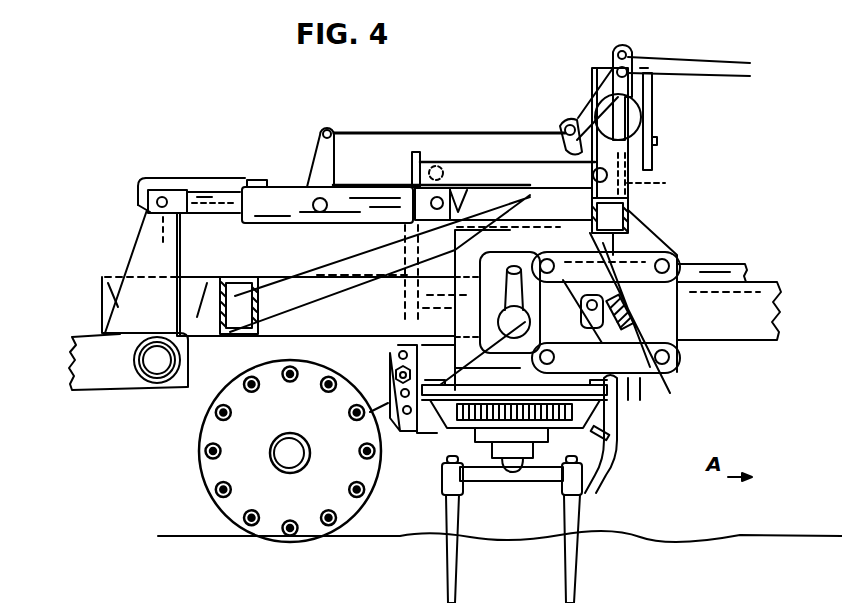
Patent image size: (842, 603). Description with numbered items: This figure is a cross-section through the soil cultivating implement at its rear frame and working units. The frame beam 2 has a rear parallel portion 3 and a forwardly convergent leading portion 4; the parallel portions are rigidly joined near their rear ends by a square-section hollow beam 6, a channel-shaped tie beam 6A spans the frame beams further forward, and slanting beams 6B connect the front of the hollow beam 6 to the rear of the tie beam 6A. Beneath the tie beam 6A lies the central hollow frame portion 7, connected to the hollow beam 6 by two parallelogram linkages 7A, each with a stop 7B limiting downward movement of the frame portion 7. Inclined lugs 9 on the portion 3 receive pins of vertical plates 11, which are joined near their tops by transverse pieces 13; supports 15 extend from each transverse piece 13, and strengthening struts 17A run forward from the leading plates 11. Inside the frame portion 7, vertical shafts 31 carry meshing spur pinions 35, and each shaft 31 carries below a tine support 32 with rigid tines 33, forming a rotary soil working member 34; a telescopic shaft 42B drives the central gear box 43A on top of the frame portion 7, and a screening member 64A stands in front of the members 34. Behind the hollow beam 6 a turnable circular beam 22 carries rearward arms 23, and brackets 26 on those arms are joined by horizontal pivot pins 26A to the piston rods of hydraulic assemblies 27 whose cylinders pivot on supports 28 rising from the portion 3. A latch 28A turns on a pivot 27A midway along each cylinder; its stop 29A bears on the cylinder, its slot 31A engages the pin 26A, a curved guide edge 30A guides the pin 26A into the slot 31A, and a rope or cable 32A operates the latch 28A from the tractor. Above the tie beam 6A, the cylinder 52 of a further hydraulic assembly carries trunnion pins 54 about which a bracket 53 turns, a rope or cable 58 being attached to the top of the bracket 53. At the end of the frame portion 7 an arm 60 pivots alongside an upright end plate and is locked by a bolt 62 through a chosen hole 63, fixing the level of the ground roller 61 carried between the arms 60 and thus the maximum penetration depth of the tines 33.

The frame beam 2 is at (756, 347).
The rear substantially parallel portion 3 is at (107, 276).
The leading portion 4 is at (728, 342).
The hollow beam 6 is at (240, 275).
The tie beam 6A is at (634, 212).
The slanting beam 6B is at (345, 292).
The central hollow frame portion 7 is at (478, 395).
The parallelogram linkage 7A is at (660, 256).
The stop 7B is at (628, 318).
The lug 9 is at (403, 183).
The plate 11 is at (417, 152).
The transverse piece 13 is at (498, 161).
The support 15 is at (530, 174).
The strengthening strut 17A is at (737, 264).
The horizontal beam 22 is at (166, 392).
The arm 23 is at (100, 390).
The bracket 26 is at (140, 236).
The horizontal pivot pin 26A is at (168, 190).
The hydraulic piston and cylinder assembly 27 is at (292, 185).
The pivot 27A is at (320, 226).
The support 28 is at (385, 247).
The latch 28A is at (205, 176).
The stop 29A is at (258, 180).
The curved guide edge 30A is at (148, 203).
The shaft 31 is at (527, 393).
The slot 31A is at (153, 244).
The tine support 32 is at (543, 485).
The pull member 32A is at (428, 129).
The tine 33 is at (565, 554).
The rotary soil working member 34 is at (442, 549).
The pinion 35 is at (468, 420).
The telescopic shaft 42B is at (518, 266).
The central gear box 43A is at (419, 272).
The cylinder 52 is at (636, 117).
The bracket 53 is at (593, 63).
The trunnion pin 54 is at (654, 142).
The pull member 58 is at (722, 58).
The arm 60 is at (365, 388).
The ground roller 61 is at (202, 455).
The bolt 62 is at (392, 373).
The hole 63 is at (406, 414).
The screening member 64A is at (600, 487).